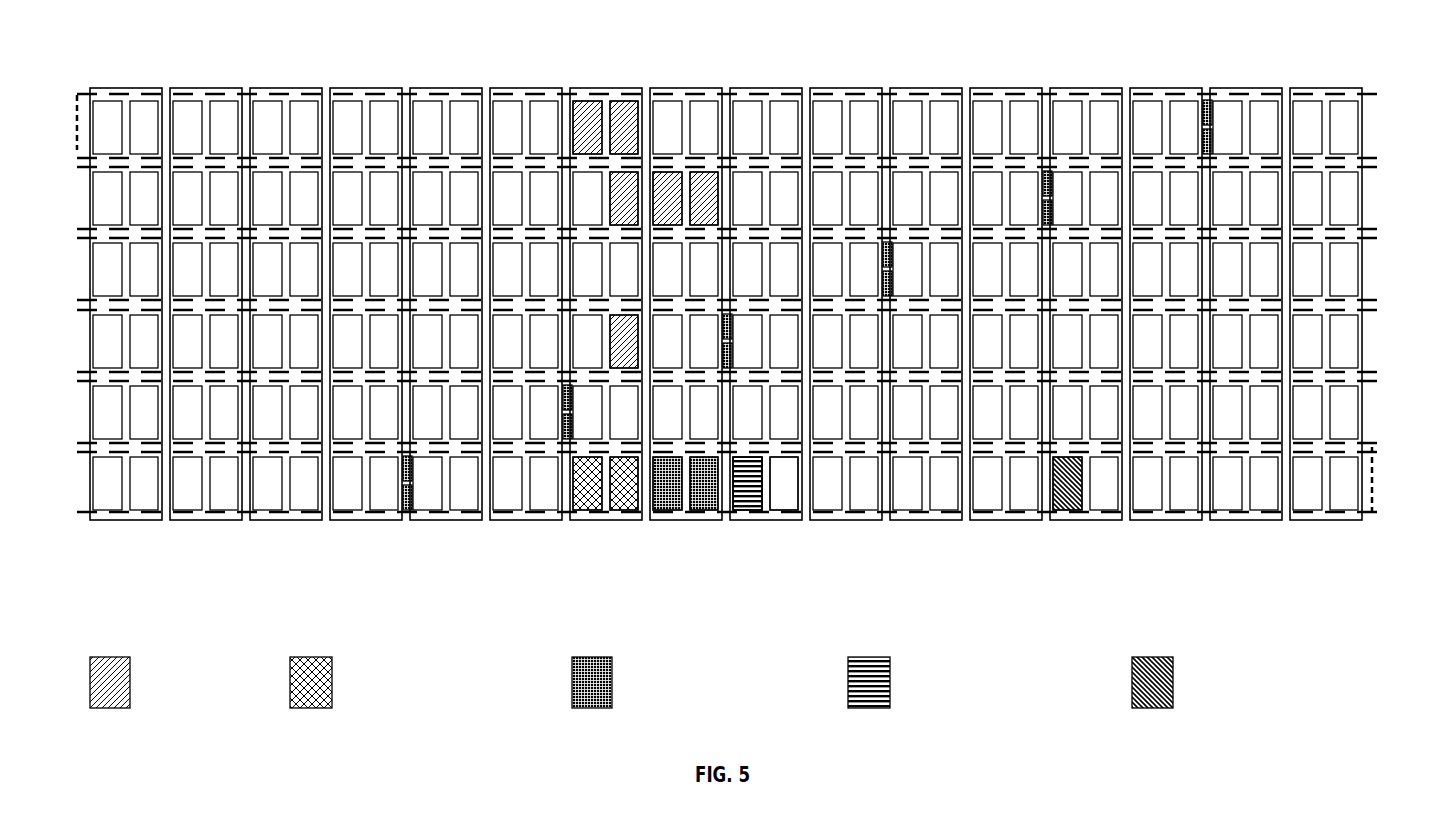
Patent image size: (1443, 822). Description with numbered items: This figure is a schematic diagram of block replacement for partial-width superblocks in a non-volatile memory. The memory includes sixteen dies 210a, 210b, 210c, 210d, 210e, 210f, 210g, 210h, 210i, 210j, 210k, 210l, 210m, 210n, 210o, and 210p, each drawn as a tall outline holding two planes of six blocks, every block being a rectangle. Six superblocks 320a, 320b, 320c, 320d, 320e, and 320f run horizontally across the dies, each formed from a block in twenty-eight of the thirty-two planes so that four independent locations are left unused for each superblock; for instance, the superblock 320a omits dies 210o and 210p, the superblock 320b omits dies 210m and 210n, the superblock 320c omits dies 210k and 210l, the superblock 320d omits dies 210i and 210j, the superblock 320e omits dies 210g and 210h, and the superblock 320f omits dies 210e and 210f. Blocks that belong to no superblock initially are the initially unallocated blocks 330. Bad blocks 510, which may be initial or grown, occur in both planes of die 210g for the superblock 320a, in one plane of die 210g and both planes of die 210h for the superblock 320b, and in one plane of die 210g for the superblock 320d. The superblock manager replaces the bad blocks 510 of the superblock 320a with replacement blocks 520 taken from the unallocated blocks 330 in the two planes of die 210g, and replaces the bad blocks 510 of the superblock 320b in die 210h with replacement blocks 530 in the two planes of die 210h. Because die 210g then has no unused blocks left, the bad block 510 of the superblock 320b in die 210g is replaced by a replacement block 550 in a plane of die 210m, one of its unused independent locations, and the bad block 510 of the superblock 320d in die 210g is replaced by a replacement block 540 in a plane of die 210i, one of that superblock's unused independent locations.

The die 210a is at (114, 88).
The die 210b is at (194, 88).
The die 210c is at (274, 88).
The die 210d is at (354, 88).
The die 210e is at (434, 88).
The die 210f is at (514, 88).
The die 210g is at (594, 88).
The die 210h is at (674, 88).
The die 210i is at (754, 88).
The die 210j is at (834, 88).
The die 210k is at (914, 88).
The die 210l is at (994, 88).
The die 210m is at (1074, 88).
The die 210n is at (1154, 88).
The die 210o is at (1234, 88).
The die 210p is at (1314, 88).
The superblock 320a is at (76, 93).
The superblock 320b is at (1340, 91).
The superblock 320c is at (1362, 168).
The superblock 320d is at (1362, 238).
The superblock 320e is at (1362, 310).
The superblock 320f is at (310, 514).
The initially unallocated blocks 330 is at (800, 519).
The bad block 510 is at (404, 404).
The replacement block 520 is at (464, 582).
The replacement block 530 is at (807, 404).
The replacement block 540 is at (911, 582).
The replacement block 550 is at (1212, 582).